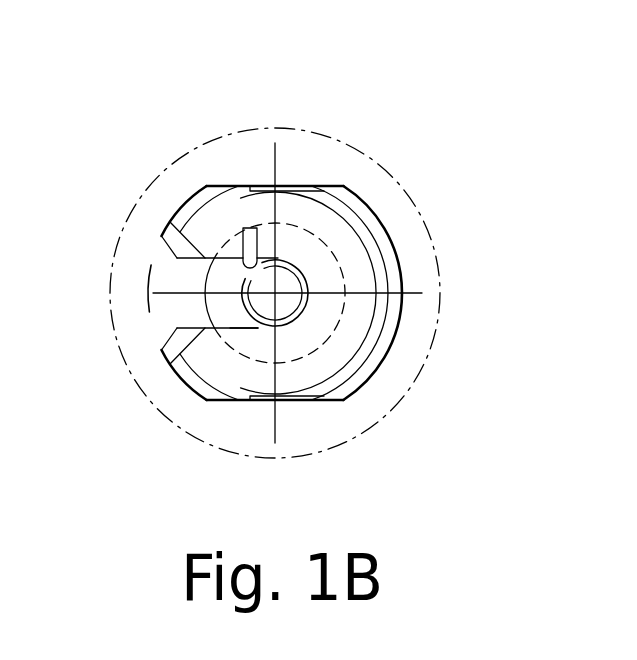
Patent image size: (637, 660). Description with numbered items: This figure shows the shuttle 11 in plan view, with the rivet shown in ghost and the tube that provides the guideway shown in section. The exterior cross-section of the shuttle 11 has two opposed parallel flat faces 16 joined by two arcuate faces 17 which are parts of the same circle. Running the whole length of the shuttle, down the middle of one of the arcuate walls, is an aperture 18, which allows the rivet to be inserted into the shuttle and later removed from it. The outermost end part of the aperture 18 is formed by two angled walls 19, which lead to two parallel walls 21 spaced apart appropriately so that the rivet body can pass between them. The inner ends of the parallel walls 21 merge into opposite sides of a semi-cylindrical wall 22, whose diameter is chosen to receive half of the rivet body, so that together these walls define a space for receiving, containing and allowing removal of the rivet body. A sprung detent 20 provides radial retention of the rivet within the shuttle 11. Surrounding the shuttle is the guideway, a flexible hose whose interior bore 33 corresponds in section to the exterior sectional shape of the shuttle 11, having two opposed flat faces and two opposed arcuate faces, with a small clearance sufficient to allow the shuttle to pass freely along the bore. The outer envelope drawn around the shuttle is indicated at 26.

The shuttle 11 is at (404, 199).
The flat faces 16 is at (303, 185).
The arcuate faces 17 is at (394, 243).
The aperture 18 is at (175, 283).
The angled walls 19 is at (177, 258).
The sprung detent 20 is at (249, 242).
The parallel walls 21 is at (238, 332).
The semi-cylindrical wall 22 is at (305, 307).
The outer envelope circle 26 is at (370, 125).
The interior bore 33 is at (153, 320).